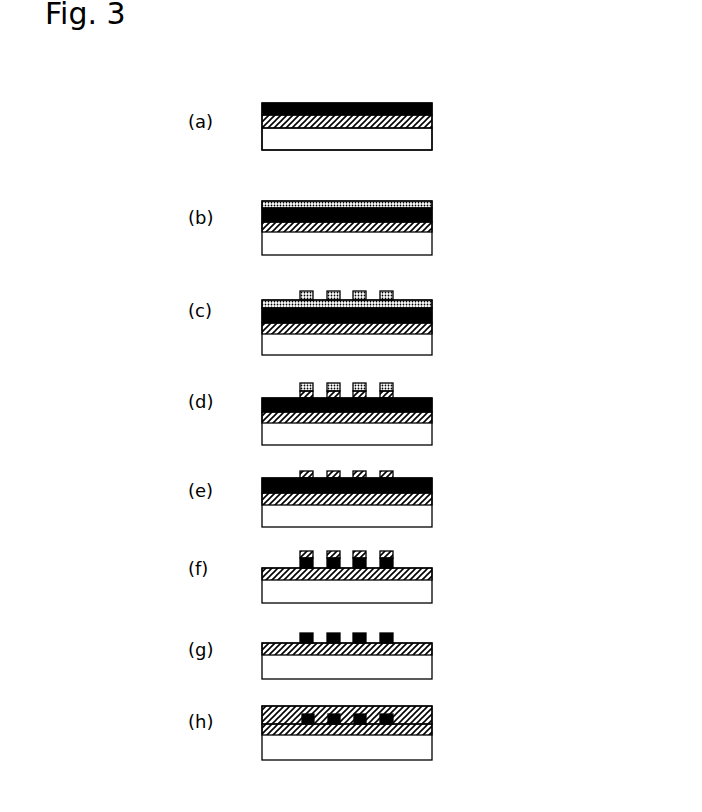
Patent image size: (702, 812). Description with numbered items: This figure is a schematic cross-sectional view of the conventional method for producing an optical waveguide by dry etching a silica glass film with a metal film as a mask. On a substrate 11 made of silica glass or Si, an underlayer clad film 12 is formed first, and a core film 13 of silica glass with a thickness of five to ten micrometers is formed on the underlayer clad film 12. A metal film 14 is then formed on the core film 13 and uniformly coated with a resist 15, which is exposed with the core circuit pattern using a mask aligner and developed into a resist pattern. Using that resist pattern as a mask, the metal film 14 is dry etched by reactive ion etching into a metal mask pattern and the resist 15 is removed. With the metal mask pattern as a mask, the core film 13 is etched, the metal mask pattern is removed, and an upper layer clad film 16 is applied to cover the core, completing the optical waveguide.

The substrate 11 is at (416, 139).
The underlayer clad film 12 is at (432, 121).
The core film 13 is at (432, 104).
The metal film 14 is at (431, 204).
The resist 15 is at (393, 292).
The upper layer clad film 16 is at (432, 712).